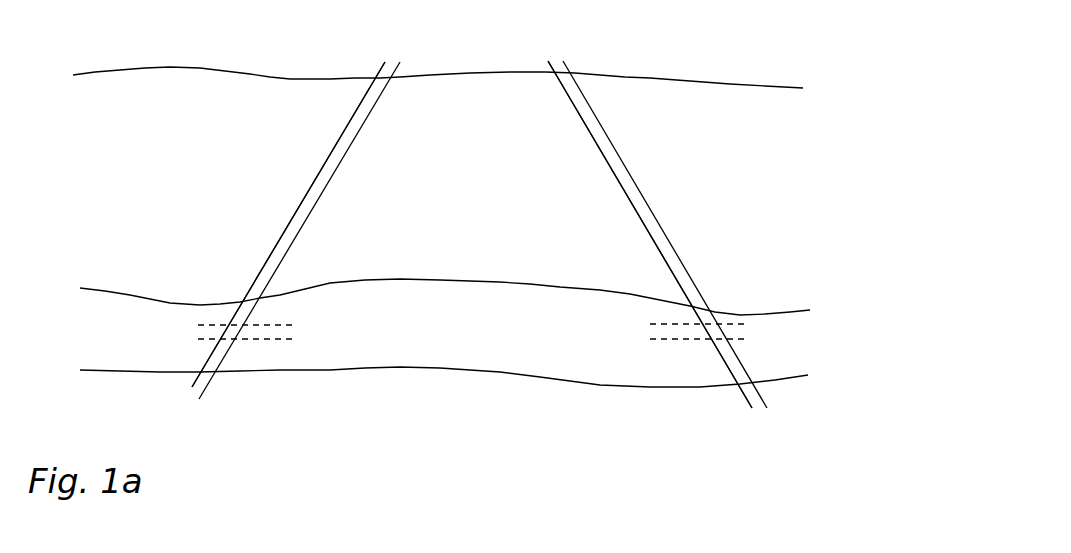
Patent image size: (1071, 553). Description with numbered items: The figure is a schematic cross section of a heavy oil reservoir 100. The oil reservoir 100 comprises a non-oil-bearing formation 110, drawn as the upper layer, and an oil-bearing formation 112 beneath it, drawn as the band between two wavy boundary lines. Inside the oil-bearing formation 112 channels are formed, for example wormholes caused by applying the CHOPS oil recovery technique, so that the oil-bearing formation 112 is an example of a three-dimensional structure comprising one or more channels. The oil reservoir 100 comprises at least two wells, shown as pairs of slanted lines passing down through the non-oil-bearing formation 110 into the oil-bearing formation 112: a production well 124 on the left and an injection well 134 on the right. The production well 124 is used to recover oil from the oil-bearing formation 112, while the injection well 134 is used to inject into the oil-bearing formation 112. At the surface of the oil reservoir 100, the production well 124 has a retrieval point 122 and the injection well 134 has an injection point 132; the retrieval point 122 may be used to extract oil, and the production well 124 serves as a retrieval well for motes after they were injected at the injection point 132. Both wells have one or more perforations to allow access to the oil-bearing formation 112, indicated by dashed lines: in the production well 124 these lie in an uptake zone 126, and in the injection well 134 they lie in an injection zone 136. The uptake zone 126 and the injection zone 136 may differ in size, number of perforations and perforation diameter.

The oil reservoir 100 is at (822, 49).
The non-oil-bearing formation 110 is at (438, 92).
The oil-bearing formation 112 is at (445, 333).
The retrieval point 122 is at (296, 217).
The production well 124 is at (293, 220).
The uptake zone 126 is at (269, 334).
The injection point 132 is at (657, 222).
The injection well 134 is at (645, 220).
The injection zone 136 is at (680, 330).